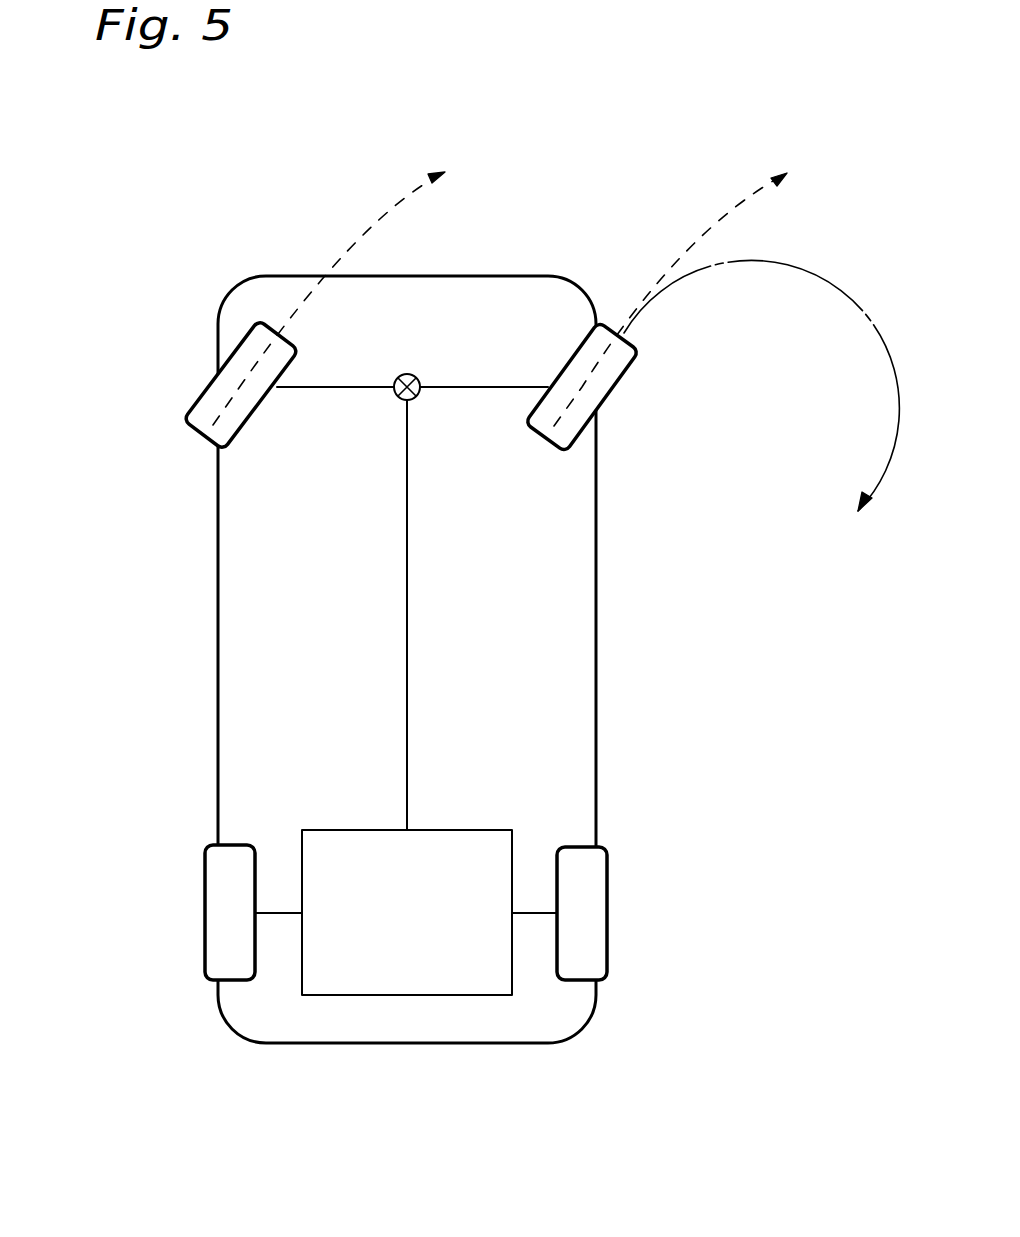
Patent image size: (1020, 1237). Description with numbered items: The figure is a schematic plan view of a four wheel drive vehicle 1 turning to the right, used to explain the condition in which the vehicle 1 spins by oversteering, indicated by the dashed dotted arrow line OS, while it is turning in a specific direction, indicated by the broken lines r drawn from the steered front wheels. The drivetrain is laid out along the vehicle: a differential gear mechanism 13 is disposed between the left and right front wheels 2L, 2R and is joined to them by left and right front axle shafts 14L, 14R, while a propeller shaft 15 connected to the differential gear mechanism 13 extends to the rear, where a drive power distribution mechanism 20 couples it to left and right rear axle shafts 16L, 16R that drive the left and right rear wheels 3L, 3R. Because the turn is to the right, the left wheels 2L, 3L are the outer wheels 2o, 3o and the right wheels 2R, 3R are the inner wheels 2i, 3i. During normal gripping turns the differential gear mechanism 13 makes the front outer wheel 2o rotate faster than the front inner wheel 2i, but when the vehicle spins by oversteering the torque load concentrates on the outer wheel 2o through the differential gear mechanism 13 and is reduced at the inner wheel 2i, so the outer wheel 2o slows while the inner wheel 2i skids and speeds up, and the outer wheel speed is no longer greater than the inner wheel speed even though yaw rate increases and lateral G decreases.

The four wheel drive vehicle 1 is at (622, 676).
The outer wheel 2o is at (241, 311).
The left front wheel 2L is at (203, 400).
The inner wheel 2i is at (656, 323).
The right front wheel 2R is at (617, 392).
The outer wheel 3o is at (146, 912).
The left rear wheel 3L is at (203, 905).
The inner wheel 3i is at (656, 913).
The right rear wheel 3R is at (603, 910).
The differential gear mechanism 13 is at (392, 395).
The left front axle shaft 14L is at (313, 387).
The right front axle shaft 14R is at (487, 387).
The propeller shaft 15 is at (407, 628).
The left rear axle shaft 16L is at (283, 910).
The right rear axle shaft 16R is at (537, 910).
The drive power distribution mechanism 20 is at (464, 816).
The broken lines indicating turning direction r is at (612, 165).
The dashed dotted arrow line indicating oversteer spin OS is at (763, 405).